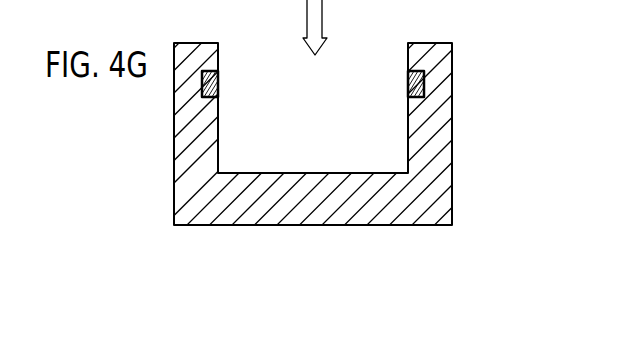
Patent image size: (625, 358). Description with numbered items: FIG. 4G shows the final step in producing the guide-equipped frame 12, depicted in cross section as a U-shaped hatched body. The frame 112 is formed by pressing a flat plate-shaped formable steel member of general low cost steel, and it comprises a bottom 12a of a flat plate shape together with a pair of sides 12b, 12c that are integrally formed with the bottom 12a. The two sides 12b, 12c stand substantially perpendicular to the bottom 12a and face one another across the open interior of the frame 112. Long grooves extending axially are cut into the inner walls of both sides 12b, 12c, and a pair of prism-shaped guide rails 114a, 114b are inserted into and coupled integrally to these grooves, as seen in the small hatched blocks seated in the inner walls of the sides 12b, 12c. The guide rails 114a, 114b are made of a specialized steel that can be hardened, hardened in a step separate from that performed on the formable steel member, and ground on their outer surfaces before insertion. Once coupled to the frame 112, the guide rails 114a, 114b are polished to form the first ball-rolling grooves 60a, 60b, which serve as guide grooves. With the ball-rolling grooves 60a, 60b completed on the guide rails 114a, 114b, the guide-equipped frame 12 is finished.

The guide-equipped frame 12 is at (463, 39).
The bottom 12a is at (303, 208).
The side 12b is at (202, 138).
The side 12c is at (433, 113).
The frame 112 is at (452, 190).
The first ball-rolling groove 60a is at (219, 84).
The first ball-rolling groove 60b is at (407, 80).
The guide rail 114a is at (202, 86).
The guide rail 114b is at (425, 80).